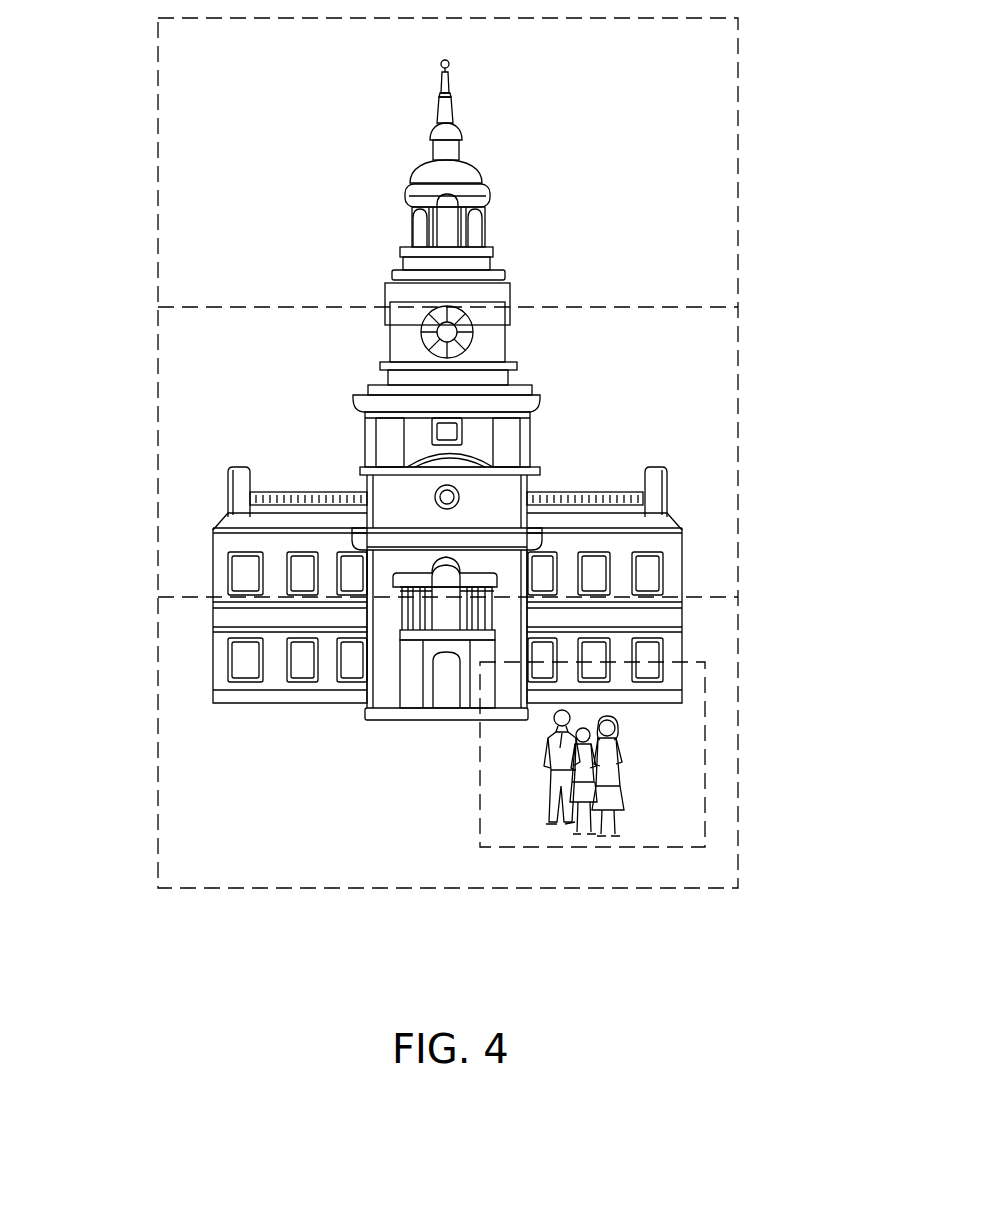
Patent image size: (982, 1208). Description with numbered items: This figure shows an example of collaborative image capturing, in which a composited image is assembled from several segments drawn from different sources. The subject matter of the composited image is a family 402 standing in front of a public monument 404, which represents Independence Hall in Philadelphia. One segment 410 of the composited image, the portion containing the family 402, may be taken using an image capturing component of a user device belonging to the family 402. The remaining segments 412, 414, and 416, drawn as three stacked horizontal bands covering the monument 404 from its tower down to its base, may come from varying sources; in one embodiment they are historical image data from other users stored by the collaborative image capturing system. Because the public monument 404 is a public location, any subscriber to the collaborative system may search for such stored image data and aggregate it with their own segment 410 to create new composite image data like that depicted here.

The family 402 is at (575, 832).
The public monument 404 is at (807, 588).
The segment of the composited image 410 is at (480, 825).
The segment 412 is at (162, 148).
The segment 414 is at (162, 473).
The segment 416 is at (162, 760).